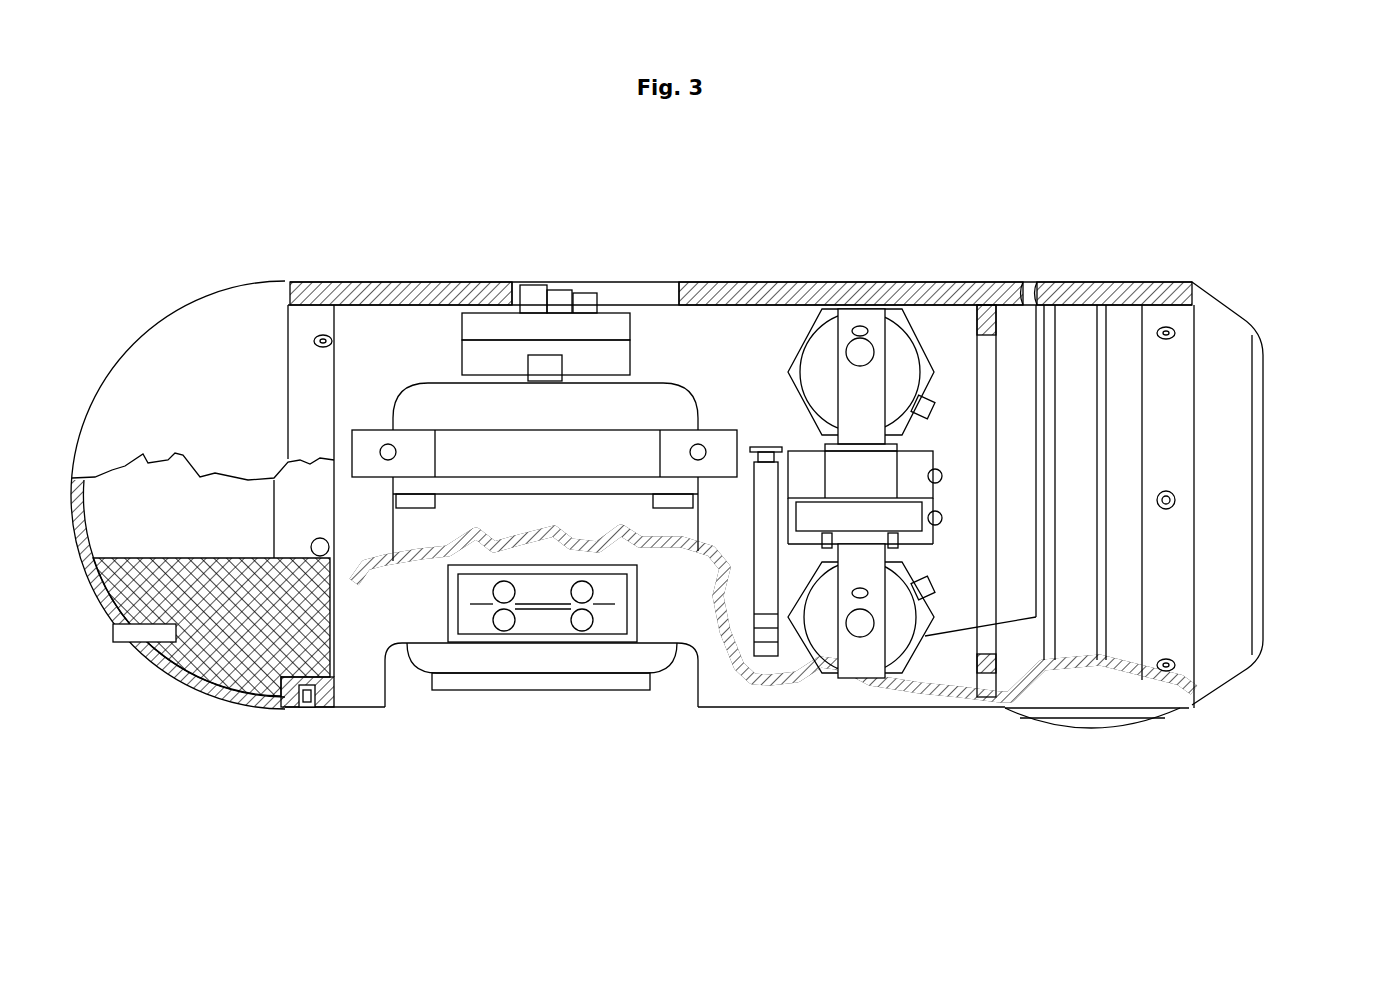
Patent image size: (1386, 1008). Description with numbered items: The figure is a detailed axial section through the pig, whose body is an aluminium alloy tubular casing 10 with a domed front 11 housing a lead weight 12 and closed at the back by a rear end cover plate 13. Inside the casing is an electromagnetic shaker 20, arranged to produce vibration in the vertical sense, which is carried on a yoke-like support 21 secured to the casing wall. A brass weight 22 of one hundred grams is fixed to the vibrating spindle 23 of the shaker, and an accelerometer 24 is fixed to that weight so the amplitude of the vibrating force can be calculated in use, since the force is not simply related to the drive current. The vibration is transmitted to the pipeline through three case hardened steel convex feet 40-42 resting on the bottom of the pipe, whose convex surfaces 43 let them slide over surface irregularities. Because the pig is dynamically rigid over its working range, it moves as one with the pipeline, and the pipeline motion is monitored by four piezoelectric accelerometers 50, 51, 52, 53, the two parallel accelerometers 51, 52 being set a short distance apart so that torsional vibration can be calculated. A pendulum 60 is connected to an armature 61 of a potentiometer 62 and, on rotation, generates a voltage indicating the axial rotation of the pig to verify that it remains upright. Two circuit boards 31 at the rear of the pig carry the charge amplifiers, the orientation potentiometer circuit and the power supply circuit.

The tubular casing 10 is at (705, 283).
The domed front 11 is at (172, 395).
The lead weight 12 is at (235, 624).
The rear end cover plate 13 is at (1182, 558).
The electromagnetic shaker 20 is at (515, 667).
The yoke-like support 21 is at (473, 459).
The brass weight 22 is at (503, 347).
The vibrating spindle 23 is at (537, 365).
The accelerometer 24 is at (532, 303).
The circuit boards 31 is at (1047, 394).
The convex feet 40-42 is at (610, 647).
The convex surfaces 43 is at (1125, 727).
The accelerometer 50 is at (983, 283).
The accelerometer 51 is at (876, 473).
The accelerometer 52 is at (925, 533).
The accelerometer 53 is at (1037, 283).
The pendulum 60 is at (760, 512).
The armature 61 is at (870, 282).
The potentiometer 62 is at (1071, 478).